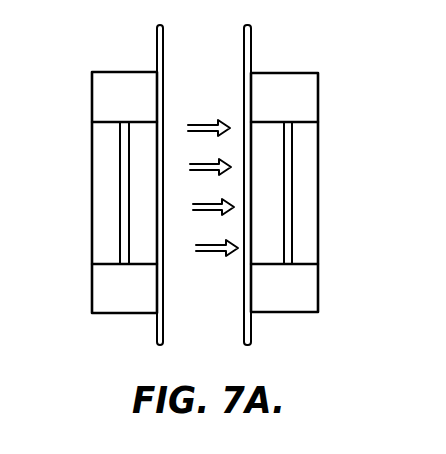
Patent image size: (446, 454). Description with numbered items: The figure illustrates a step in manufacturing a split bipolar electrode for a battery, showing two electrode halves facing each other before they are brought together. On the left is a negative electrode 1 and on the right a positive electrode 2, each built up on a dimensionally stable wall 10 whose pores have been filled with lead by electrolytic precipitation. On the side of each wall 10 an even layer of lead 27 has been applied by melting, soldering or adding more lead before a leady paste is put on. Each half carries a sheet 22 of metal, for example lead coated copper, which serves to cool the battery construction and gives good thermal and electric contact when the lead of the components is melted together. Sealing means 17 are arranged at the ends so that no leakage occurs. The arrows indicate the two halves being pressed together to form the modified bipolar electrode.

The negative electrode 1 is at (106, 180).
The positive electrode 2 is at (307, 238).
The wall 10 is at (138, 153).
The sealing means 17 is at (113, 288).
The sheet of metal 22 is at (157, 50).
The even layer of lead 27 is at (120, 212).